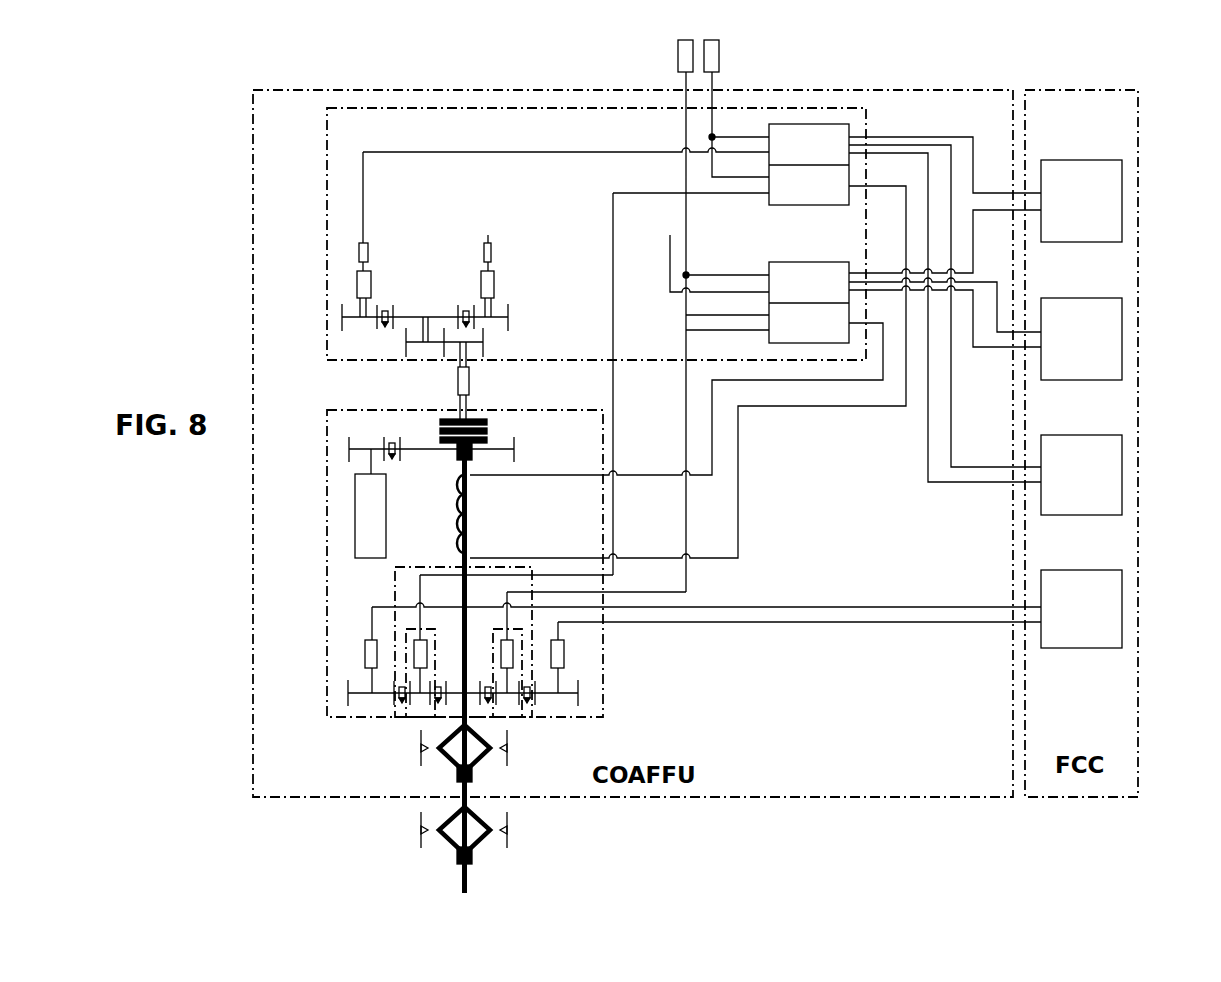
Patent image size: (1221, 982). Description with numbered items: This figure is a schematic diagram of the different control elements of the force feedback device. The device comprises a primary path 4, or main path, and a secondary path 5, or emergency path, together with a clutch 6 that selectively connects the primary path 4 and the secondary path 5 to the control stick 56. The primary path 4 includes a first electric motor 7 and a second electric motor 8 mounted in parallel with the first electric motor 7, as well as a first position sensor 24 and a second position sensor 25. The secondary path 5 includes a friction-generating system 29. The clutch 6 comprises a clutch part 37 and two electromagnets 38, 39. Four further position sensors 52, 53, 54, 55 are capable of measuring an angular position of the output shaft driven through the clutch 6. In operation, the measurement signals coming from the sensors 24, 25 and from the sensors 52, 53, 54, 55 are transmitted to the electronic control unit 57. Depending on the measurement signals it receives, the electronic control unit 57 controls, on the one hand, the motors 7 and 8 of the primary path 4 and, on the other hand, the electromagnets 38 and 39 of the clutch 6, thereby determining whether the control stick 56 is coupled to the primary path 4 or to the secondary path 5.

The primary path 4 is at (323, 220).
The secondary path 5 is at (323, 583).
The clutch 6 is at (430, 428).
The first electric motor 7 is at (371, 284).
The second electric motor 8 is at (494, 284).
The first position sensor 24 is at (368, 253).
The second position sensor 25 is at (491, 253).
The friction-generating system 29 is at (390, 515).
The clutch part 37 is at (487, 431).
The electromagnet 38 is at (507, 514).
The electromagnet 39 is at (471, 535).
The position sensor 52 is at (365, 650).
The position sensor 53 is at (427, 655).
The position sensor 54 is at (501, 652).
The position sensor 55 is at (564, 655).
The control stick 56 is at (467, 876).
The electronic control unit 57 is at (1142, 408).